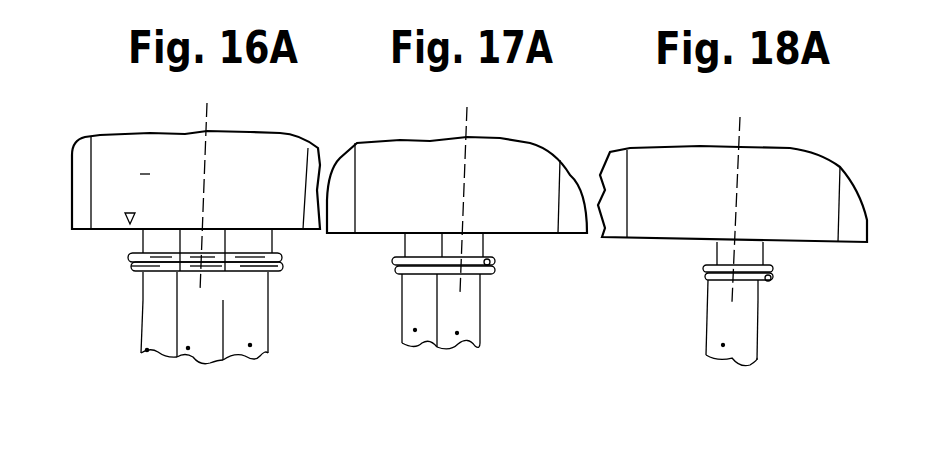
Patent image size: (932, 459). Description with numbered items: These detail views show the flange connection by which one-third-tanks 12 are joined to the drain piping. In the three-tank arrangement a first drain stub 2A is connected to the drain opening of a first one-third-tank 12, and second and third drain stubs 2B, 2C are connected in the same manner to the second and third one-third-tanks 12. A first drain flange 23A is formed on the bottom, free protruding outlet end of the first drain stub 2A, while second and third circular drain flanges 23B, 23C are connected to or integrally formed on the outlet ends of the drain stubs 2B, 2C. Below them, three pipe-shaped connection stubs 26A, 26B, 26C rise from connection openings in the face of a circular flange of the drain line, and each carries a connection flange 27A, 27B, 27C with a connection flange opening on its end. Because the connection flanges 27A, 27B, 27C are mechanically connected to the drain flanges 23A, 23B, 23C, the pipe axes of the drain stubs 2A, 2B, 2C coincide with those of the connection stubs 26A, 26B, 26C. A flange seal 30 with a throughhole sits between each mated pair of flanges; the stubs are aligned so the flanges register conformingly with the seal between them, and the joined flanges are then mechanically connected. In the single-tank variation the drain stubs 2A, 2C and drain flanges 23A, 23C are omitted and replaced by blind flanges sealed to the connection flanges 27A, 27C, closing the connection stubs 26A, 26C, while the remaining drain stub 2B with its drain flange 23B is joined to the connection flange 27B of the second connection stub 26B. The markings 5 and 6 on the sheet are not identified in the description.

In FIG. 16A, the one-third-tank 12 is at (140, 131).
In FIG. 17A, the one-third-tank 12 is at (543, 140).
In FIG. 18A, the one-third-tank 12 is at (805, 145).
In FIG. 16A, the body 5 is at (148, 165).
In FIG. 16A, the first drain stub 2A is at (258, 243).
In FIG. 16A, the second drain stub 2B is at (212, 229).
In FIG. 17A, the second drain stub 2B is at (472, 243).
In FIG. 18A, the second drain stub 2B is at (750, 253).
In FIG. 16A, the third drain stub 2C is at (143, 238).
In FIG. 17A, the third drain stub 2C is at (425, 247).
In FIG. 16A, the flange seal 30 is at (127, 264).
In FIG. 18A, the flange seal 30 is at (694, 272).
In FIG. 16A, the first drain flange 23A is at (280, 272).
In FIG. 16A, the second circular drain flange 23B is at (242, 276).
In FIG. 17A, the second circular drain flange 23B is at (493, 267).
In FIG. 18A, the second circular drain flange 23B is at (775, 273).
In FIG. 16A, the third circular drain flange 23C is at (133, 269).
In FIG. 17A, the third circular drain flange 23C is at (398, 258).
In FIG. 16A, the first connection flange 27A is at (270, 275).
In FIG. 16A, the second connection flange 27B is at (180, 273).
In FIG. 17A, the second connection flange 27B is at (483, 274).
In FIG. 18A, the second connection flange 27B is at (770, 282).
In FIG. 16A, the third connection flange 27C is at (143, 273).
In FIG. 17A, the third connection flange 27C is at (405, 274).
In FIG. 16A, the first connection stub 26A is at (235, 360).
In FIG. 16A, the second connection stub 26B is at (177, 360).
In FIG. 17A, the second connection stub 26B is at (457, 334).
In FIG. 18A, the second connection stub 26B is at (723, 345).
In FIG. 16A, the third connection stub 26C is at (140, 355).
In FIG. 17A, the third connection stub 26C is at (415, 331).
In FIG. 17A, the bristle carrier 6 is at (443, 457).
In FIG. 18A, the bristle carrier 6 is at (688, 458).